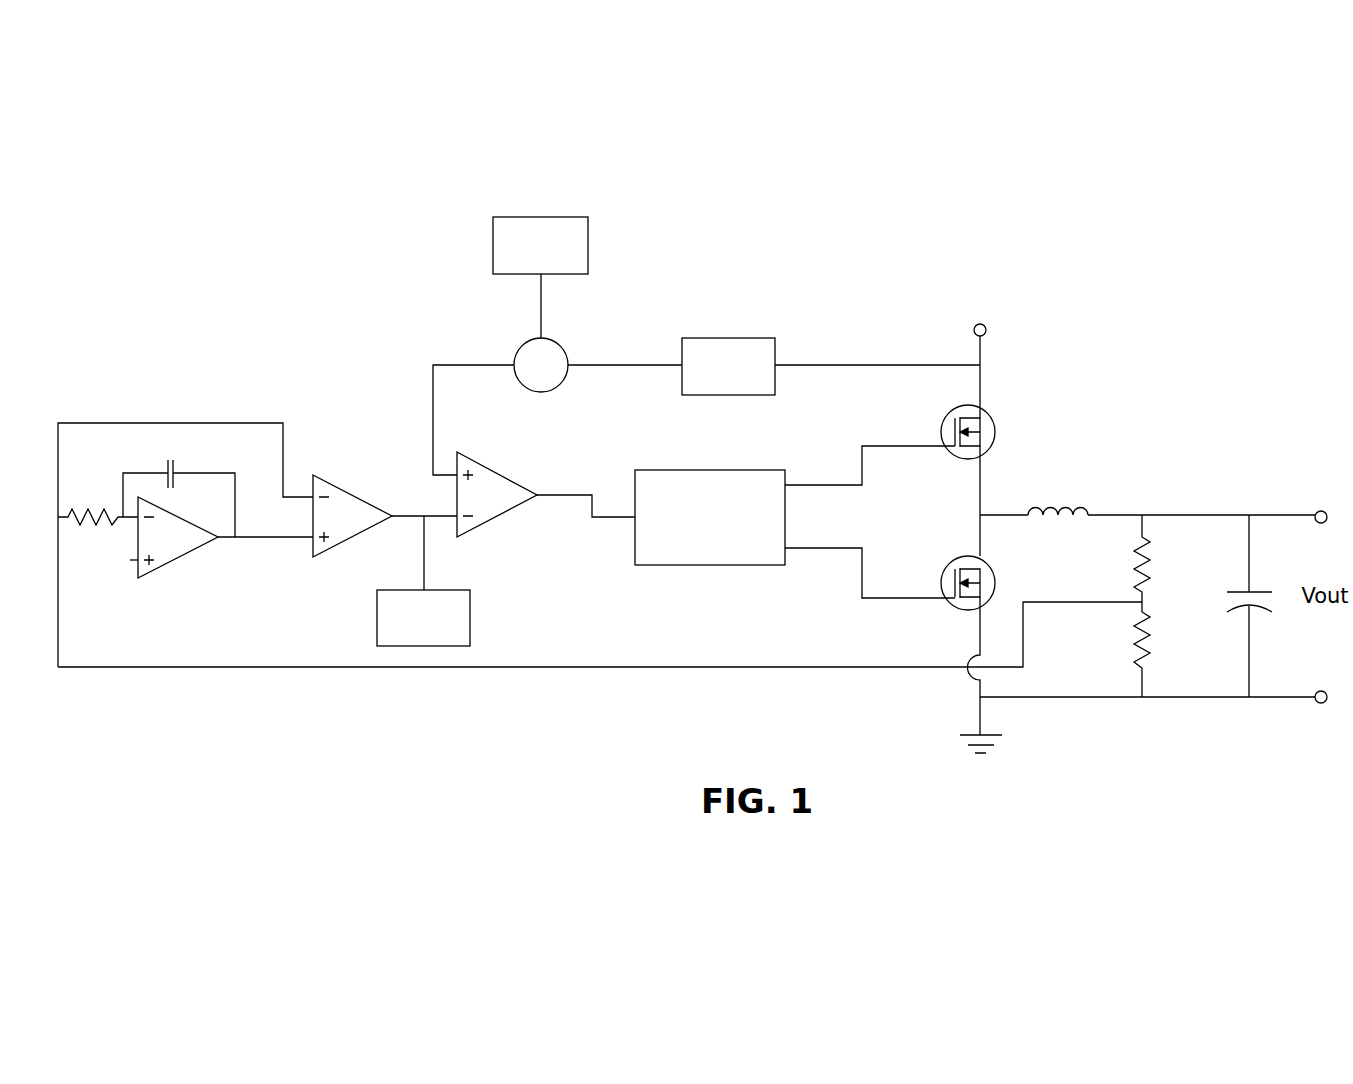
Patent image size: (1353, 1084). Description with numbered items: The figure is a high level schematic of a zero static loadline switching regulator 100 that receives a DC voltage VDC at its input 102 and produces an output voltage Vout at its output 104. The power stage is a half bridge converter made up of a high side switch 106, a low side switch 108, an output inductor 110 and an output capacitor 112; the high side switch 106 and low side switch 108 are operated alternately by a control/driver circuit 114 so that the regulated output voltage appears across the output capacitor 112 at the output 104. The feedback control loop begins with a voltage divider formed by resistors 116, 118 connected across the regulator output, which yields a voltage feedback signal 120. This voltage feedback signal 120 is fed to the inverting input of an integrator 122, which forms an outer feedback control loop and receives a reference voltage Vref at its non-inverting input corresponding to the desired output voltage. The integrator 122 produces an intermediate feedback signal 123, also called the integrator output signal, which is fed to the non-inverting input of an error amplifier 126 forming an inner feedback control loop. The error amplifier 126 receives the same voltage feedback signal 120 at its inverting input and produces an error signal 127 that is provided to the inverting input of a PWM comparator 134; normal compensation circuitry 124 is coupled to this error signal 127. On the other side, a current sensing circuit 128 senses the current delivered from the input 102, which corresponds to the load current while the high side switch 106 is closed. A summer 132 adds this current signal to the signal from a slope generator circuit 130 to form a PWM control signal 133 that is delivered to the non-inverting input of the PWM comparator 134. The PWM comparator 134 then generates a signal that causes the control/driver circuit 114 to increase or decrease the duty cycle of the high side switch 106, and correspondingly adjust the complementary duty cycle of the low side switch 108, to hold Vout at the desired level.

The zero static loadline switching regulator 100 is at (804, 252).
The input 102 is at (988, 340).
The output 104 is at (1318, 508).
The high side switch 106 is at (995, 425).
The low side switch 108 is at (945, 565).
The output inductor 110 is at (1038, 497).
The output capacitor 112 is at (1262, 612).
The control/driver circuit 114 is at (654, 468).
The resistor 116 is at (1135, 548).
The resistor 118 is at (1150, 645).
The voltage feedback signal 120 is at (625, 667).
The integrator 122 is at (178, 558).
The intermediate feedback signal 123 is at (250, 535).
The compensation circuitry 124 is at (470, 640).
The error amplifier 126 is at (318, 568).
The error signal 127 is at (414, 507).
The current sensing circuit 128 is at (698, 337).
The slope generator circuit 130 is at (503, 278).
The summer 132 is at (552, 393).
The PWM control signal 133 is at (427, 413).
The PWM comparator 134 is at (510, 475).